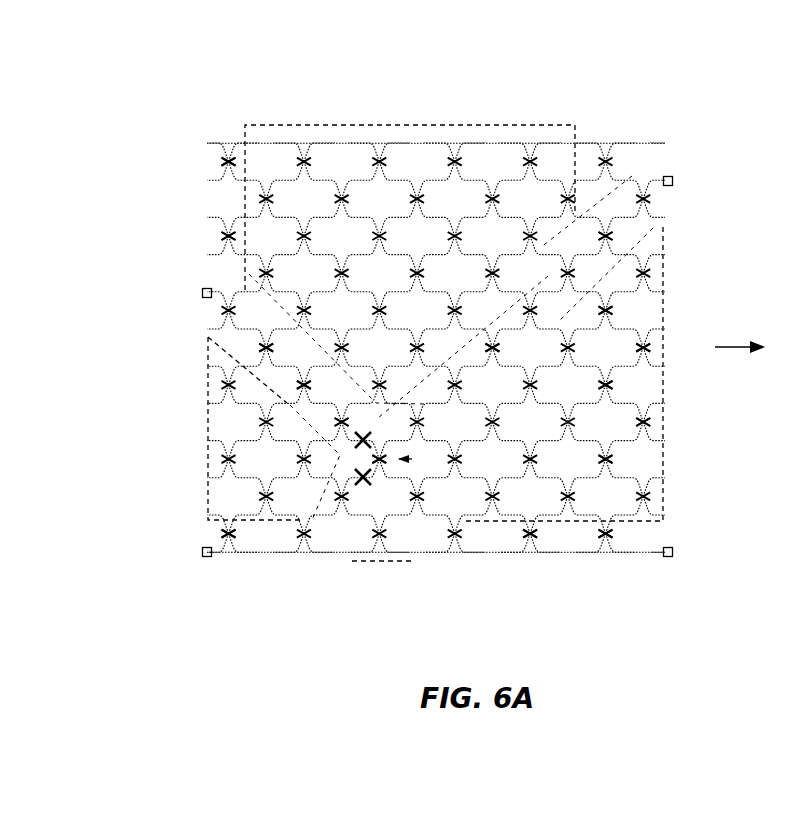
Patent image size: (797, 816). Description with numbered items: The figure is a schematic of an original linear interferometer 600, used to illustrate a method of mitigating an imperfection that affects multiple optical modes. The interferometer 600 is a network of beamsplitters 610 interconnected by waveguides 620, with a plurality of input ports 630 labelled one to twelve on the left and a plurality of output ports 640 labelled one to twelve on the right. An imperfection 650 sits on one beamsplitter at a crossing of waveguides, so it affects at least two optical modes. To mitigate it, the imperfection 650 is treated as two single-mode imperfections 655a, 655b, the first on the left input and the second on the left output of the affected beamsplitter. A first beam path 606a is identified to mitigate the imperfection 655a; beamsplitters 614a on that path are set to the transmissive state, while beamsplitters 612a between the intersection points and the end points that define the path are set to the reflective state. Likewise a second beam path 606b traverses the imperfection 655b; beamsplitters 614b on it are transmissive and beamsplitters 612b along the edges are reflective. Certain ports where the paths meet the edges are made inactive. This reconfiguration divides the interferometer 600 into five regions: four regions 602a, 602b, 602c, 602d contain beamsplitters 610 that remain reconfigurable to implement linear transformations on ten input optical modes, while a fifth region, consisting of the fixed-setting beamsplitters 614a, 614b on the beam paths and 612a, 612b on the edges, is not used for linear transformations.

The original linear interferometer 600 is at (491, 88).
The first region 602a is at (309, 127).
The second region 602b is at (207, 436).
The third region 602c is at (372, 565).
The fourth region 602d is at (666, 457).
The first beam path 606a is at (236, 330).
The second beam path 606b is at (630, 227).
The beamsplitters 610 is at (616, 470).
The reflective-state beamsplitters on first beam path edges 612a is at (238, 220).
The reflective-state beamsplitters on second beam path edges 612b is at (214, 537).
The transmissive-state beamsplitters on first beam path 614a is at (326, 418).
The transmissive-state beamsplitters on second beam path 614b is at (498, 321).
The waveguides 620 is at (621, 394).
The input ports 630 is at (188, 127).
The output ports 640 is at (700, 133).
The imperfection 650 is at (389, 473).
The first single-mode imperfection 655a is at (349, 446).
The second single-mode imperfection 655b is at (363, 491).